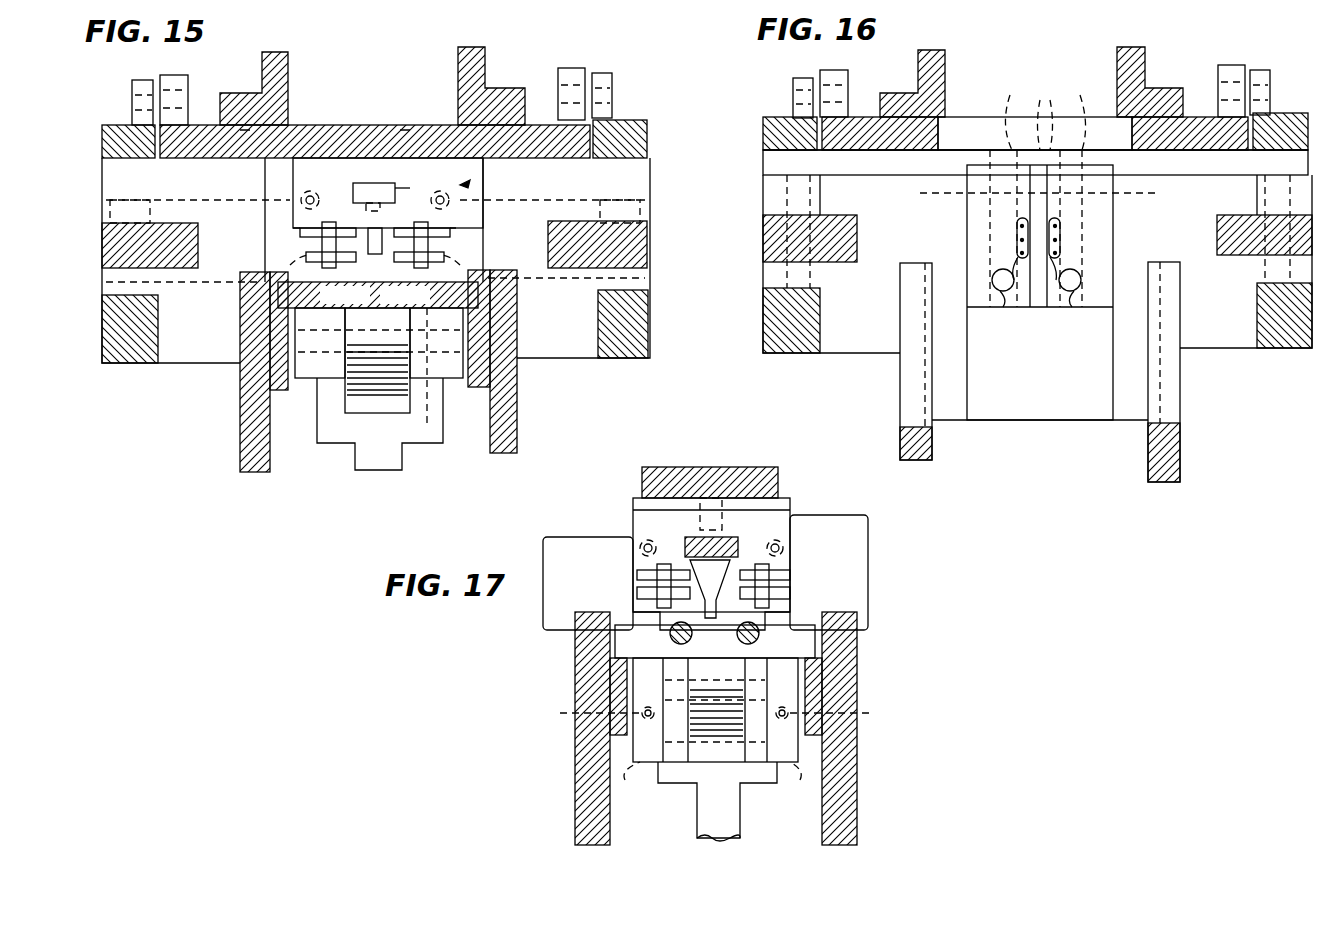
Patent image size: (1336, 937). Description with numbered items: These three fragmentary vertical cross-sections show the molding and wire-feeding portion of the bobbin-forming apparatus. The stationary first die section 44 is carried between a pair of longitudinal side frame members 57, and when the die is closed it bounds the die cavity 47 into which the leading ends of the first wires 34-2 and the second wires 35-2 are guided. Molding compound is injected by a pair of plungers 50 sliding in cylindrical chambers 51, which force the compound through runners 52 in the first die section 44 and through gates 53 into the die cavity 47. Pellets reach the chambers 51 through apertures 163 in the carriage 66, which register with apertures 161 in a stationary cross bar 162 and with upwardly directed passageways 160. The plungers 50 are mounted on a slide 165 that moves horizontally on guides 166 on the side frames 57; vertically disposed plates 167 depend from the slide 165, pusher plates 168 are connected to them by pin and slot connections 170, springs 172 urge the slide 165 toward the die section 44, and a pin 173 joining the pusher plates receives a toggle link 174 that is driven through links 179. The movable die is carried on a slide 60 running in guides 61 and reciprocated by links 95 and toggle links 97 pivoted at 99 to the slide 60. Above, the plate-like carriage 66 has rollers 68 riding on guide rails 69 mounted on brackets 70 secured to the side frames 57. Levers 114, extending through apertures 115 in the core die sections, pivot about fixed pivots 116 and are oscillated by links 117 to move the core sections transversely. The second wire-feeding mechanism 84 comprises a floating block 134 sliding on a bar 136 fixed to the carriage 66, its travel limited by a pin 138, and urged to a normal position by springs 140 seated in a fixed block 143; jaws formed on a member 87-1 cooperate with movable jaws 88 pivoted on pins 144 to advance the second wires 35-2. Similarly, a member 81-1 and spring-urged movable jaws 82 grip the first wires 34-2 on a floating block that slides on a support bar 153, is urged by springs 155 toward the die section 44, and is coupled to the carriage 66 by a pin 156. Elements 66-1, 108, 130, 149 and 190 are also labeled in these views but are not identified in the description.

In FIG. 17, the first wires 34-2 is at (702, 627).
In FIG. 15, the second wires 35-2 is at (378, 295).
In FIG. 16, the stationary first die section 44 is at (1000, 405).
In FIG. 16, the die cavity 47 is at (1015, 232).
In FIG. 17, the plungers 50 is at (735, 646).
In FIG. 16, the cylindrical chambers 51 is at (1046, 312).
In FIG. 16, the runners 52 is at (1030, 290).
In FIG. 16, the gates 53 is at (1012, 258).
In FIG. 15, the longitudinal side frame members 57 is at (245, 432).
In FIG. 16, the longitudinal side frame members 57 is at (910, 403).
In FIG. 17, the longitudinal side frame members 57 is at (585, 760).
In FIG. 15, the slide 60 is at (300, 318).
In FIG. 15, the guides 61 is at (278, 385).
In FIG. 15, the carriage 66 is at (295, 134).
In FIG. 16, the carriage 66 is at (1200, 115).
In FIG. 17, the carriage 66 is at (742, 480).
In FIG. 16, the plate portion 66-1 is at (962, 125).
In FIG. 15, the rollers 68 is at (132, 85).
In FIG. 16, the rollers 68 is at (795, 85).
In FIG. 15, the guide rails 69 is at (125, 135).
In FIG. 16, the guide rails 69 is at (775, 133).
In FIG. 15, the brackets 70 is at (135, 362).
In FIG. 16, the brackets 70 is at (770, 195).
In FIG. 17, the member 81-1 is at (728, 560).
In FIG. 17, the movable jaws 82 is at (645, 594).
In FIG. 15, the second wire-feeding mechanism 84 is at (468, 182).
In FIG. 15, the member 87-1 is at (401, 295).
In FIG. 15, the movable jaws 88 is at (300, 232).
In FIG. 15, the links 95 is at (328, 440).
In FIG. 15, the toggle links 97 is at (378, 385).
In FIG. 15, the pivot connection 99 is at (419, 375).
In FIG. 17, the side block 108 is at (563, 548).
In FIG. 15, the levers 114 is at (145, 235).
In FIG. 16, the levers 114 is at (775, 257).
In FIG. 15, the apertures 115 is at (165, 268).
In FIG. 16, the fixed pivot 116 is at (770, 166).
In FIG. 15, the link 117 is at (216, 200).
In FIG. 17, the side block 130 is at (855, 571).
In FIG. 15, the floating block 134 is at (410, 180).
In FIG. 15, the bar 136 is at (362, 183).
In FIG. 15, the pin 138 is at (378, 175).
In FIG. 15, the springs 140 is at (300, 178).
In FIG. 15, the fixed block 143 is at (320, 150).
In FIG. 15, the pins 144 is at (300, 262).
In FIG. 17, the body 149 is at (782, 498).
In FIG. 17, the horizontal support bar 153 is at (700, 537).
In FIG. 17, the springs 155 is at (638, 540).
In FIG. 17, the pin 156 is at (693, 485).
In FIG. 16, the passageways 160 is at (1032, 190).
In FIG. 16, the apertures 161 is at (1038, 197).
In FIG. 16, the stationary cross bar 162 is at (765, 152).
In FIG. 16, the apertures 163 is at (1051, 181).
In FIG. 17, the slide 165 is at (812, 640).
In FIG. 17, the guides 166 is at (612, 684).
In FIG. 17, the plates 167 is at (652, 768).
In FIG. 17, the pusher plate 168 is at (730, 742).
In FIG. 17, the pin and slot connections 170 is at (714, 782).
In FIG. 17, the springs 172 is at (711, 713).
In FIG. 17, the pin 173 is at (668, 665).
In FIG. 17, the toggle link 174 is at (735, 672).
In FIG. 17, the links 179 is at (705, 825).
In FIG. 15, the block 190 is at (460, 64).
In FIG. 16, the block 190 is at (1120, 52).